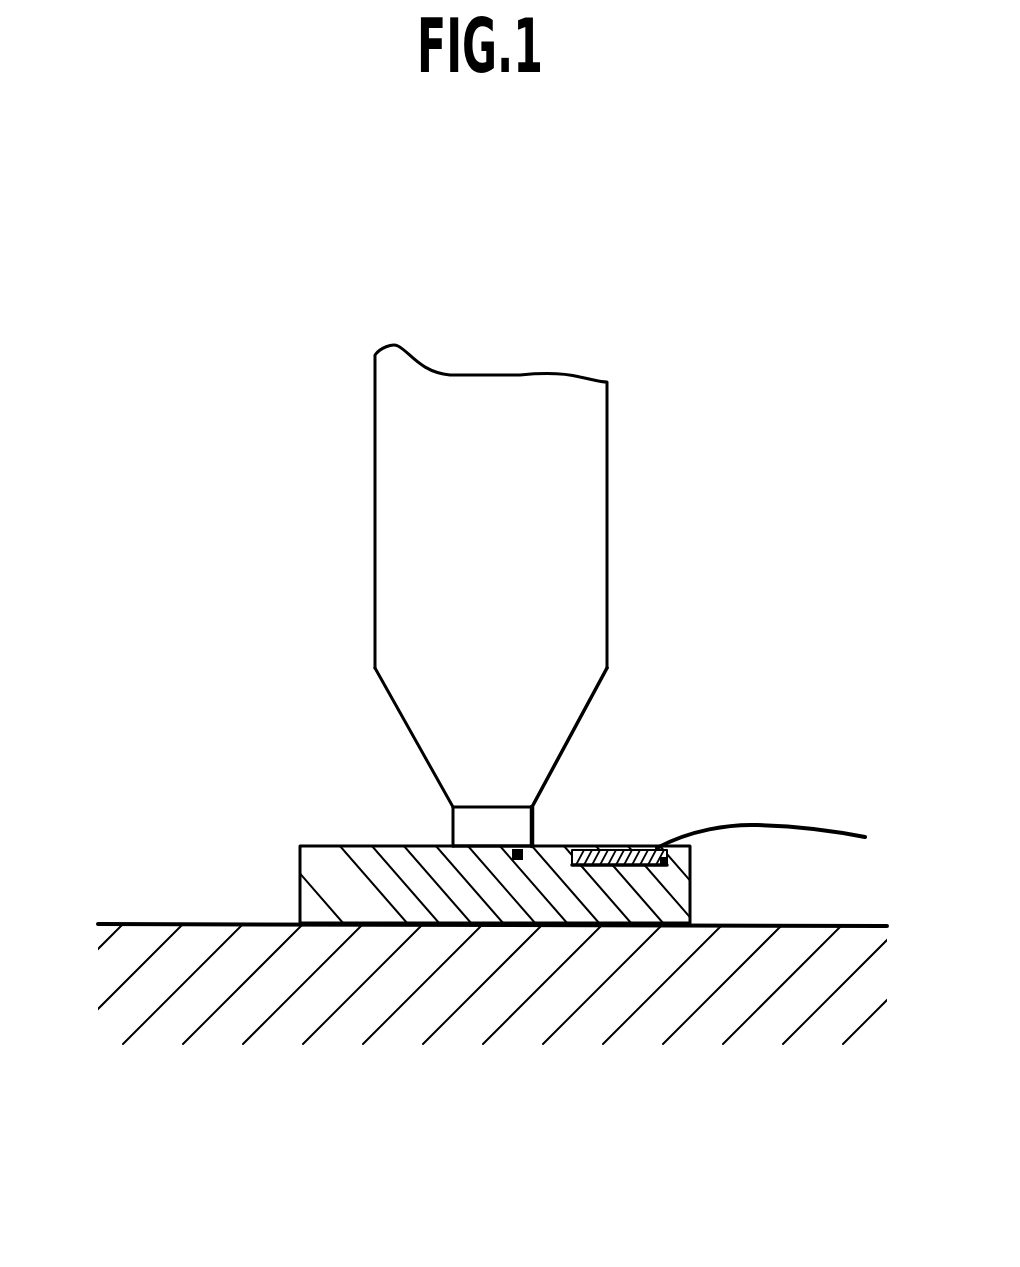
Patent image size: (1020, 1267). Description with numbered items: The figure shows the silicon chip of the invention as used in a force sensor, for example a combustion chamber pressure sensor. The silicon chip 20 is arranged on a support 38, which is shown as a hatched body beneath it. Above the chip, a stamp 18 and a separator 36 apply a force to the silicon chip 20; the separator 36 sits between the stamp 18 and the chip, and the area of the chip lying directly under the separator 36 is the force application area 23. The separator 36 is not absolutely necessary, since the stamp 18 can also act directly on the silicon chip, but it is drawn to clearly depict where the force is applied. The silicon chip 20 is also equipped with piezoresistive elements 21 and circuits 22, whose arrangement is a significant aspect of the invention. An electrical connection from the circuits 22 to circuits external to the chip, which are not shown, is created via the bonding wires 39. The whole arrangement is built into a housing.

The stamp 18 is at (547, 519).
The silicon chip 20 is at (332, 888).
The piezoresistive elements 21 is at (519, 862).
The circuits 22 is at (667, 860).
The force application area 23 is at (490, 846).
The separator 36 is at (518, 828).
The support 38 is at (312, 1000).
The bonding wires 39 is at (813, 827).